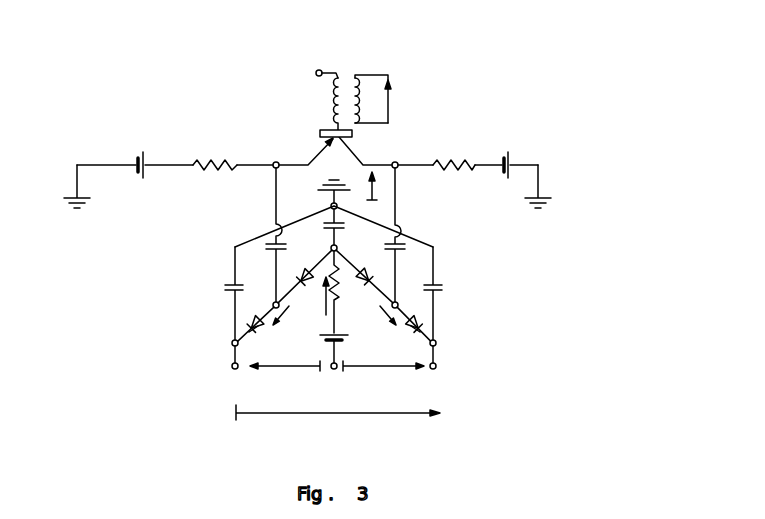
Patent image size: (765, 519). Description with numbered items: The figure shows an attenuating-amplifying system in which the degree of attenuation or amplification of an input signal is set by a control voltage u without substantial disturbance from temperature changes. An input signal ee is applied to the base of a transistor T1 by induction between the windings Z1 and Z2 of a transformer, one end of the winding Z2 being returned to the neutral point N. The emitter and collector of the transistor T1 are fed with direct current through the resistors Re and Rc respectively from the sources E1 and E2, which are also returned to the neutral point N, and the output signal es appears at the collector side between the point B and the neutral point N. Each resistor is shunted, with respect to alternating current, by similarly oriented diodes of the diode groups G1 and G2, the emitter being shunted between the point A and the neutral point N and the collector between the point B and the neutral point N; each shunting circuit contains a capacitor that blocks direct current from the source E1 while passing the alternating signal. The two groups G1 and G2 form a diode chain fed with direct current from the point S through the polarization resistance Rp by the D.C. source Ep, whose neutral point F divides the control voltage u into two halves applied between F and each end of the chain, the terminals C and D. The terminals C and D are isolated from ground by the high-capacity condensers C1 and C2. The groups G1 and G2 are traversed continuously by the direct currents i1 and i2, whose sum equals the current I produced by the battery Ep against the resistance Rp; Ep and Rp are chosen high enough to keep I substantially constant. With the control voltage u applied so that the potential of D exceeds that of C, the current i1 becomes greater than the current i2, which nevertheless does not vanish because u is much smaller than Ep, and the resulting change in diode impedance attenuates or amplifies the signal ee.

The neutral point N is at (303, 129).
The transformer winding Z1 is at (359, 90).
The transformer winding Z2 is at (330, 90).
The input signal ee is at (397, 101).
The transistor T1 is at (320, 134).
The point A is at (273, 156).
The point B is at (392, 156).
The emitter resistor Re is at (215, 156).
The collector resistor Rc is at (454, 156).
The current source E1 is at (135, 172).
The current source E2 is at (507, 172).
The output signal es is at (378, 187).
The point S is at (337, 230).
The diode group G1 is at (266, 301).
The diode group G2 is at (404, 301).
The condenser C1 is at (221, 293).
The condenser C2 is at (444, 293).
The polarization resistance Rp is at (345, 292).
The current I is at (320, 296).
The direct current i1 is at (286, 317).
The direct current i2 is at (380, 318).
The D.C. source Ep is at (342, 341).
The neutral point of current source Ep F is at (338, 358).
The diode chain terminal C is at (226, 358).
The diode chain terminal D is at (441, 358).
The control voltage u is at (382, 386).